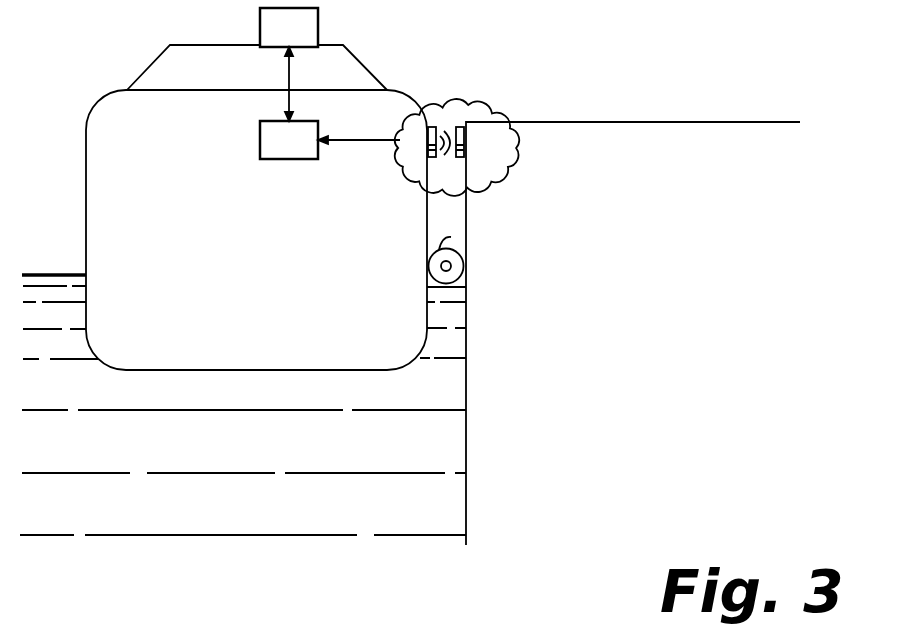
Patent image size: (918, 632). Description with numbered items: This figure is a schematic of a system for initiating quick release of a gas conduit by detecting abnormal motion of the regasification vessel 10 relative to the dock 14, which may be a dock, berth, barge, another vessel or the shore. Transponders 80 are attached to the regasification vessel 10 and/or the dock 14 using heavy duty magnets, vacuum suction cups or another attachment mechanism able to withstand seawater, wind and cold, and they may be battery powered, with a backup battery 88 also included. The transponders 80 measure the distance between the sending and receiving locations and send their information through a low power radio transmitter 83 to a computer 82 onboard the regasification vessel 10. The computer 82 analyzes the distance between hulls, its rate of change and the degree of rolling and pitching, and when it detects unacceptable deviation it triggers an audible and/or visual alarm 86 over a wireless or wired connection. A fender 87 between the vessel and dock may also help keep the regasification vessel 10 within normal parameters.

The regasification vessel 10 is at (270, 265).
The dock 14 is at (648, 282).
The transponders 80 is at (449, 128).
The computer 82 is at (301, 153).
The low power radio transmitter 83 is at (460, 127).
The alarm 86 is at (301, 41).
The fender 87 is at (451, 237).
The backup battery 88 is at (498, 208).